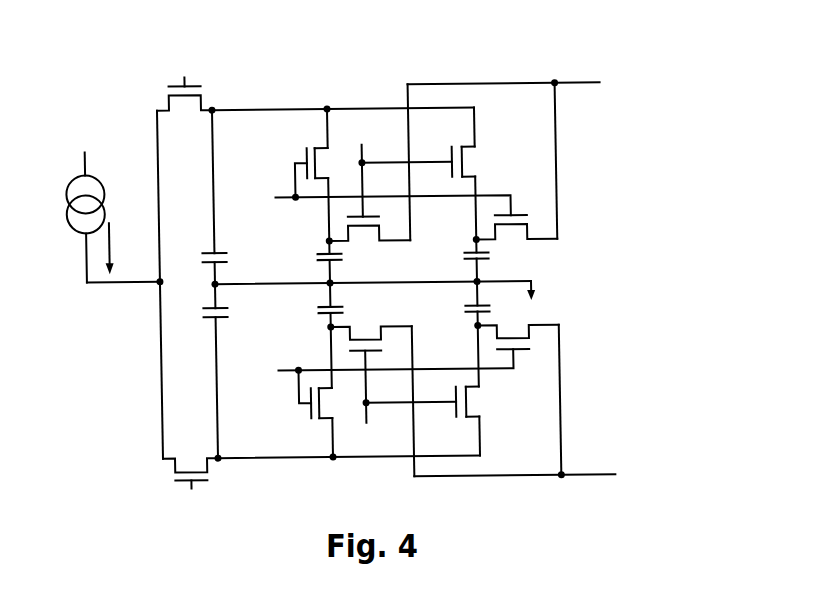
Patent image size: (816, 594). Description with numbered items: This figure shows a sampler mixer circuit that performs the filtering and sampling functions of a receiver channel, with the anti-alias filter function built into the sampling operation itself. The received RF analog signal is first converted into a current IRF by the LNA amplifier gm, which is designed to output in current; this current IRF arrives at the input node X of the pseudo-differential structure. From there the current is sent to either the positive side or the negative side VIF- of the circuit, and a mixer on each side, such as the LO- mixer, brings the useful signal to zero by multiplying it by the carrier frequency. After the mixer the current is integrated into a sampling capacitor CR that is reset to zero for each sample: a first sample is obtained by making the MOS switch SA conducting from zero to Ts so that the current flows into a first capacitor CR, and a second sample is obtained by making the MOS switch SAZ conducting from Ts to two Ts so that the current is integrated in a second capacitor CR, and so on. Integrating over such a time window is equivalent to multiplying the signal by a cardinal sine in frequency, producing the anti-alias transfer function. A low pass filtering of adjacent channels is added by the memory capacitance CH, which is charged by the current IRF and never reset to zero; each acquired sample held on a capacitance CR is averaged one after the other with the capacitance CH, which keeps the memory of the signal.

The LNA amplifier gm is at (113, 217).
The current iRF IRF is at (123, 248).
The input node X is at (147, 297).
The LO- mixer LO- is at (191, 487).
The memory capacitance CH is at (198, 288).
The sampling capacitor CR is at (417, 289).
The MOS switch SA is at (400, 282).
The MOS switch SAZ is at (403, 286).
The negative side VIF- is at (534, 408).